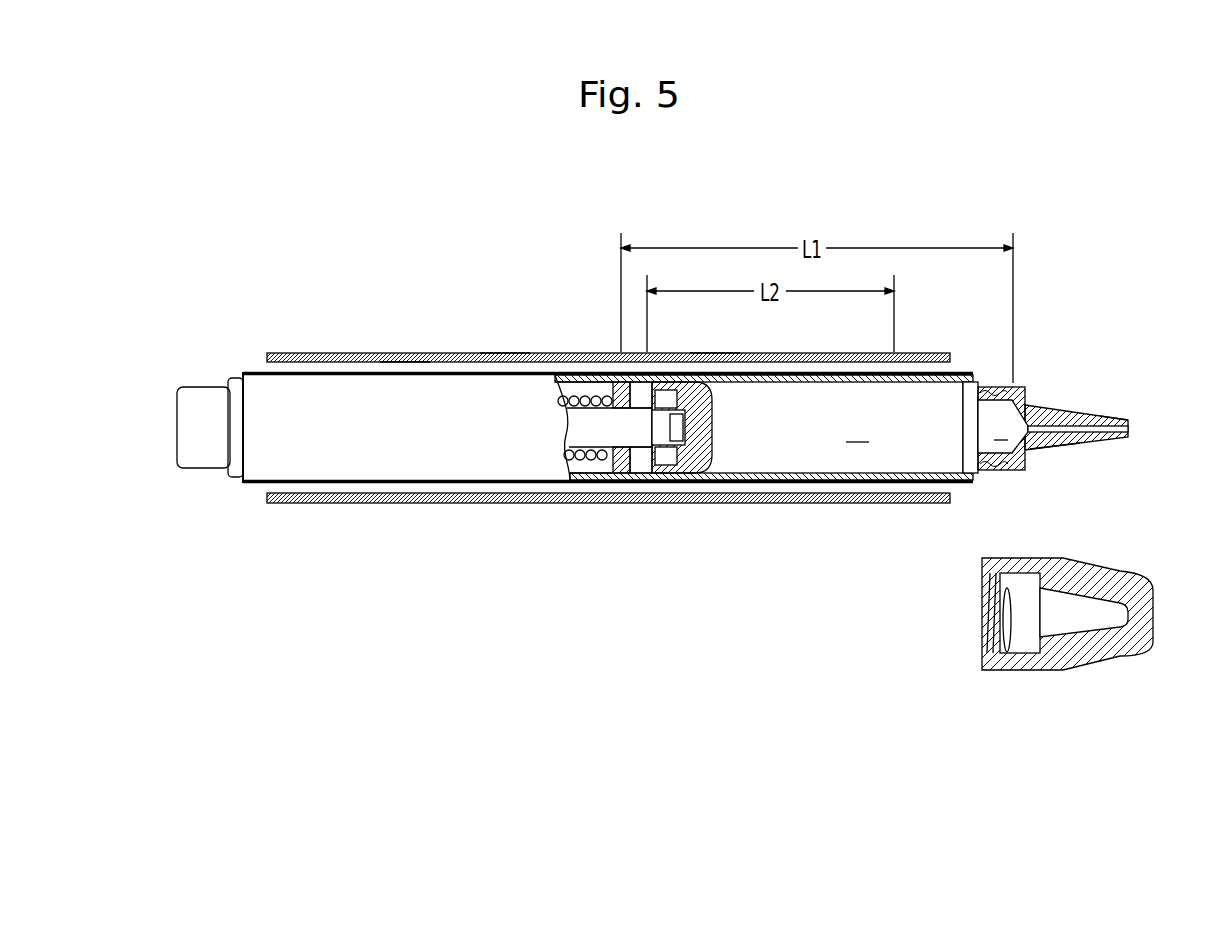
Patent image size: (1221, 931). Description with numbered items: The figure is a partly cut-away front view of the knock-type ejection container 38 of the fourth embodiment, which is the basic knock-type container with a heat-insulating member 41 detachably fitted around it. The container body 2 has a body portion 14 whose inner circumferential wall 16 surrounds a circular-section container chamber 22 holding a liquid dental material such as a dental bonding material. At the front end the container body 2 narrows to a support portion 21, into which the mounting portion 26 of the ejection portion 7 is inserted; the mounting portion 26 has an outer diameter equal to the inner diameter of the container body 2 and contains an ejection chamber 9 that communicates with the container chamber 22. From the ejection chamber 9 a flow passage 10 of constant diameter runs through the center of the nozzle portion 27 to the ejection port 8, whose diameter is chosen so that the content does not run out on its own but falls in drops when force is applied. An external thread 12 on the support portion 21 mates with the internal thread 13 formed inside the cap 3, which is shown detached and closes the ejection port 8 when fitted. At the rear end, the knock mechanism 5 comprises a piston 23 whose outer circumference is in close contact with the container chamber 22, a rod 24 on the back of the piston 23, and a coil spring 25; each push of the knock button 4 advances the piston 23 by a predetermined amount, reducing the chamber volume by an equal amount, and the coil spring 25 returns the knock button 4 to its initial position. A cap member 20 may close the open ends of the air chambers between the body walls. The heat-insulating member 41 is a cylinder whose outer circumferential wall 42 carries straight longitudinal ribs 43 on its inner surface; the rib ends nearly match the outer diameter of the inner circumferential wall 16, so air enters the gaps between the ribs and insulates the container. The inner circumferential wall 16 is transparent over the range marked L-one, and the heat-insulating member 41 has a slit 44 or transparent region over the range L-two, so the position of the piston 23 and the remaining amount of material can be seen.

The container body 2 is at (455, 371).
The cap 3 is at (1123, 568).
The knock button 4 is at (203, 460).
The knock mechanism 5 is at (711, 432).
The ejection portion 7 is at (1053, 452).
The ejection port 8 is at (1130, 428).
The ejection chamber 9 is at (1003, 426).
The flow passage 10 is at (1112, 418).
The external thread 12 is at (995, 387).
The internal thread 13 is at (988, 637).
The body portion 14 is at (452, 466).
The inner circumferential wall 16 is at (587, 372).
The cap member 20 is at (233, 375).
The support portion 21 is at (1006, 386).
The container chamber 22 is at (857, 429).
The piston 23 is at (704, 467).
The rod 24 is at (639, 440).
The coil spring 25 is at (593, 462).
The mounting portion 26 is at (995, 472).
The nozzle portion 27 is at (1078, 406).
The knock-type ejection container 38 is at (746, 223).
The heat-insulating member 41 is at (504, 353).
The outer circumferential wall 42 is at (360, 353).
The longitudinal ribs 43 is at (405, 362).
The slit 44 is at (713, 353).